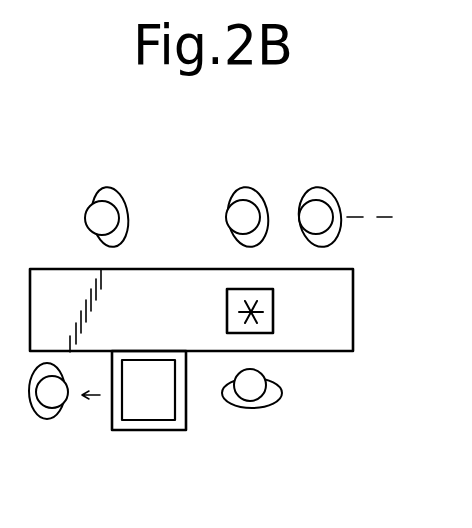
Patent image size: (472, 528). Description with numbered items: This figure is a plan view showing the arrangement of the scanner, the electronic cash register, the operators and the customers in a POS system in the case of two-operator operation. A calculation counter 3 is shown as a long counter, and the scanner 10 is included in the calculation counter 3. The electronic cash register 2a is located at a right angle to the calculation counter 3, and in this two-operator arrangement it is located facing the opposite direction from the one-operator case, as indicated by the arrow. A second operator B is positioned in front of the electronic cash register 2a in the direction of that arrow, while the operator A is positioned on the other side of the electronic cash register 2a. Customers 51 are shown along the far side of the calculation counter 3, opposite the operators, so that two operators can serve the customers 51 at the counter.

The calculation counter 3 is at (45, 282).
The electronic cash register 2a is at (148, 410).
The scanner 10 is at (267, 298).
The customers 51 is at (316, 190).
The operator A is at (277, 393).
The second operator B is at (53, 415).